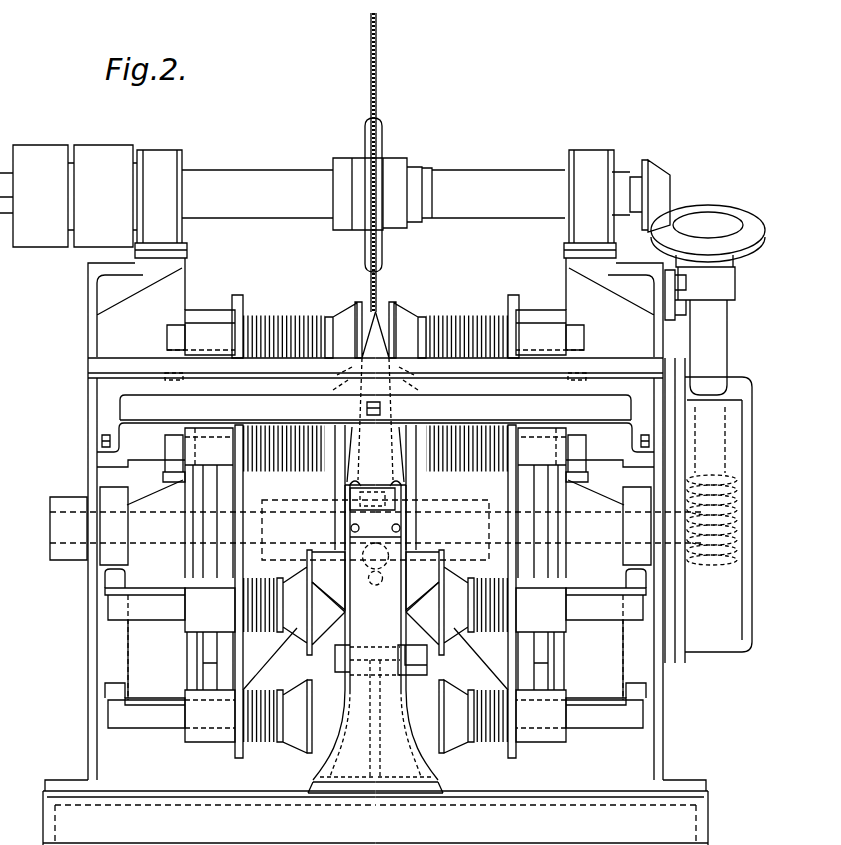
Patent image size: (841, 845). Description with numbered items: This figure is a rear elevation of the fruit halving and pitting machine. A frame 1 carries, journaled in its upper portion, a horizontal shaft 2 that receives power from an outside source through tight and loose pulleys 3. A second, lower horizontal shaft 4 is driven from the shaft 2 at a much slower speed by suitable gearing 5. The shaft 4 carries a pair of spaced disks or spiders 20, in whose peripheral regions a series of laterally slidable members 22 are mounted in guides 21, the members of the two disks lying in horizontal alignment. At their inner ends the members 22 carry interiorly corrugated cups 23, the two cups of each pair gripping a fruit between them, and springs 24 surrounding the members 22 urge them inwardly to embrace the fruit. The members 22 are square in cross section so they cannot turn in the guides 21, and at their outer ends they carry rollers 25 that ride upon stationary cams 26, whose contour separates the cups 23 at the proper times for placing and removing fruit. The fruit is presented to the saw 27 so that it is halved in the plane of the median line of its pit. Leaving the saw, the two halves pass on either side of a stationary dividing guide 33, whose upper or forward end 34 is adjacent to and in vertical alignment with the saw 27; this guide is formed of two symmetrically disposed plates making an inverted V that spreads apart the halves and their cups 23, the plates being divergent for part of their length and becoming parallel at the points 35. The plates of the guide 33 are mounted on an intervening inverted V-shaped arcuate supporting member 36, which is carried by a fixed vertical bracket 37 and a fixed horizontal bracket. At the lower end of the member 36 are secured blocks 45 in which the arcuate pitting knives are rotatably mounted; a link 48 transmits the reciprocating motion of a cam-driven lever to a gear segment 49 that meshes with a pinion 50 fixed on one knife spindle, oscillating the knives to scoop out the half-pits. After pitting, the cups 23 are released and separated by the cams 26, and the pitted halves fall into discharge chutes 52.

The frame 1 is at (93, 699).
The horizontal shaft 2 is at (426, 195).
The tight and loose pulleys 3 is at (321, 827).
The second lower horizontal shaft 4 is at (48, 528).
The gearing 5 is at (685, 212).
The spaced disks or spiders 20 is at (237, 752).
The guides 21 is at (375, 526).
The laterally slidable members 22 is at (166, 336).
The interiorly corrugated cups 23 is at (343, 317).
The springs 24 is at (300, 318).
The rollers 25 is at (165, 377).
The stationary cams 26 is at (147, 497).
The saw 27 is at (378, 106).
The stationary dividing guide 33 is at (355, 430).
The upper or forward end of the dividing guide 34 is at (378, 305).
The points where guide plates become parallel 35 is at (375, 478).
The inverted V-shaped arcuate supporting member 36 is at (375, 419).
The fixed vertical bracket 37 is at (382, 598).
The blocks 45 is at (374, 563).
The link 48 is at (400, 594).
The gear segment 49 is at (398, 497).
The pinion 50 is at (345, 528).
The discharge chutes 52 is at (428, 612).